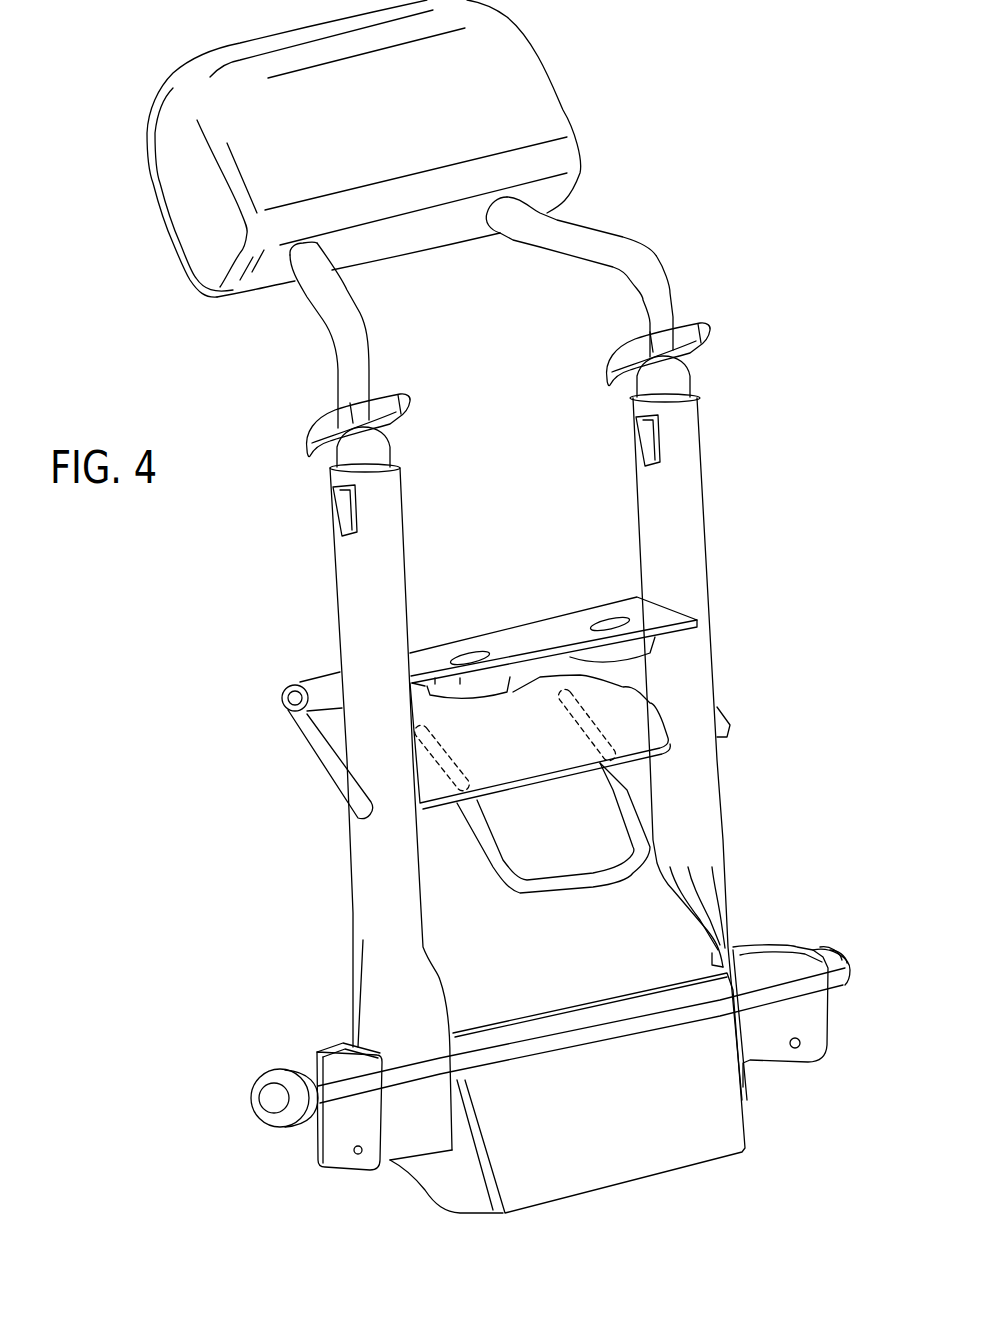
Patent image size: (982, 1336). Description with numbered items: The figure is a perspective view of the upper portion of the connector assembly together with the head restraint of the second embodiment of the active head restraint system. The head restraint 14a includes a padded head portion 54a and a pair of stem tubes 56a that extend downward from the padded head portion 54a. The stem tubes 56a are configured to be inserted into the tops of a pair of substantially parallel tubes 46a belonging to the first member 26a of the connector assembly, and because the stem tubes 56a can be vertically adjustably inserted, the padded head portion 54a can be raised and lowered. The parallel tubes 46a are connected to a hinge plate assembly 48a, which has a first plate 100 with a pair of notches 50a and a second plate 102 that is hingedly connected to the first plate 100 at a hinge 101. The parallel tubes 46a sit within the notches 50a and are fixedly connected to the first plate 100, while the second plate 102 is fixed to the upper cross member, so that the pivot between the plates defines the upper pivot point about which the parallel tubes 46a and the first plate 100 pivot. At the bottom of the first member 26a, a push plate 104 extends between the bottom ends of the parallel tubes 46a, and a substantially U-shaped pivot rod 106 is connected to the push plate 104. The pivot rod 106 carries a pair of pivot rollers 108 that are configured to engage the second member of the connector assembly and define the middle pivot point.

The head restraint 14a is at (190, 273).
The padded head portion 54a is at (193, 183).
The stem tubes 56a is at (663, 290).
The parallel tubes 46a is at (690, 552).
The first member 26a is at (522, 803).
The hinge plate assembly 48a is at (553, 591).
The second plate 102 is at (535, 628).
The notches 50a is at (548, 678).
The first plate 100 is at (507, 770).
The hinge 101 is at (268, 703).
The push plate 104 is at (583, 1167).
The U-shaped pivot rod 106 is at (603, 1030).
The pivot rollers 108 is at (835, 945).